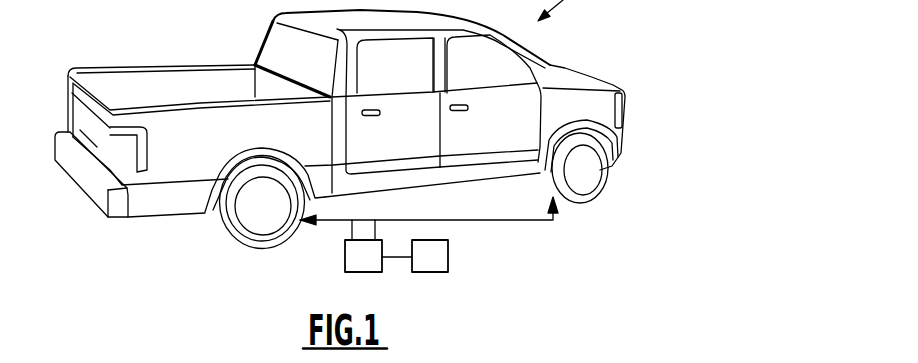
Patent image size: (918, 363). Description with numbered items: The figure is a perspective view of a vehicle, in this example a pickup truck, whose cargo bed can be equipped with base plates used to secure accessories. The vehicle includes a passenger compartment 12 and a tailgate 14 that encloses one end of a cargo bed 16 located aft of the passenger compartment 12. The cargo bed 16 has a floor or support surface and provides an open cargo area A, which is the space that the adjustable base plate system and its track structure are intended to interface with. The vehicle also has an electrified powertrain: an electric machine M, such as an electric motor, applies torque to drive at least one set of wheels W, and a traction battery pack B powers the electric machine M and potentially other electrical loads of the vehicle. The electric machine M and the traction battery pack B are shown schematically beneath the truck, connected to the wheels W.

The passenger compartment 12 is at (378, 85).
The tailgate 14 is at (95, 132).
The cargo bed 16 is at (247, 83).
The open cargo area A is at (210, 95).
The wheels W is at (257, 220).
The electric machine M is at (363, 257).
The traction battery pack B is at (430, 257).